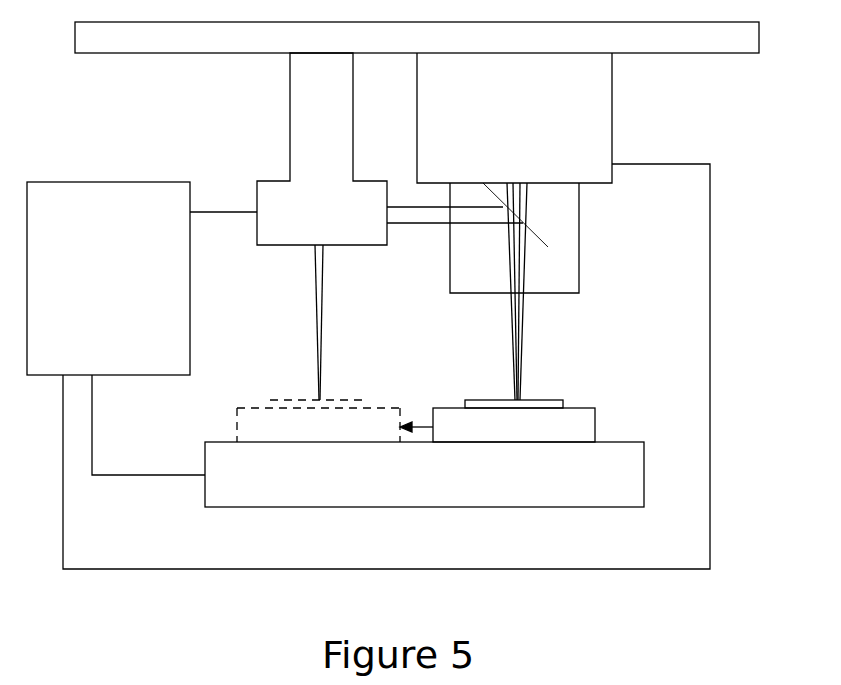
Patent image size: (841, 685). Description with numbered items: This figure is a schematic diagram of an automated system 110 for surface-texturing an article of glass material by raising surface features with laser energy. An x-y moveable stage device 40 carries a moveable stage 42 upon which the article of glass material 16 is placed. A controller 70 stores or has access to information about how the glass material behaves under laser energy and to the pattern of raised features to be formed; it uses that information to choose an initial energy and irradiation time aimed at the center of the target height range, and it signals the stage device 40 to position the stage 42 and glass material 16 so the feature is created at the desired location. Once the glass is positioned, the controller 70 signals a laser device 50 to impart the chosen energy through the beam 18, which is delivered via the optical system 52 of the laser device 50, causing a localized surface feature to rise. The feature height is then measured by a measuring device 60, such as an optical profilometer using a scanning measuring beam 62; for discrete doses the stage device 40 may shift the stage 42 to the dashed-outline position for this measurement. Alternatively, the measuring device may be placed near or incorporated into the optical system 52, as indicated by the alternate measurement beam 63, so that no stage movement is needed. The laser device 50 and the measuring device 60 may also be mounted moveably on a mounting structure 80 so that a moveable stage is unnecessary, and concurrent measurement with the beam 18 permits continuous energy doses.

The article of glass material 16 is at (543, 403).
The beam 18 is at (520, 313).
The x-y moveable stage device 40 is at (372, 483).
The moveable stage 42 is at (577, 427).
The laser device 50 is at (587, 135).
The optical system 52 is at (562, 230).
The measuring device 60 is at (322, 149).
The scanning measuring beam 62 is at (325, 295).
The alternate measurement beam 63 is at (405, 225).
The controller 70 is at (142, 278).
The mounting structure 80 is at (677, 36).
The system 110 is at (227, 595).